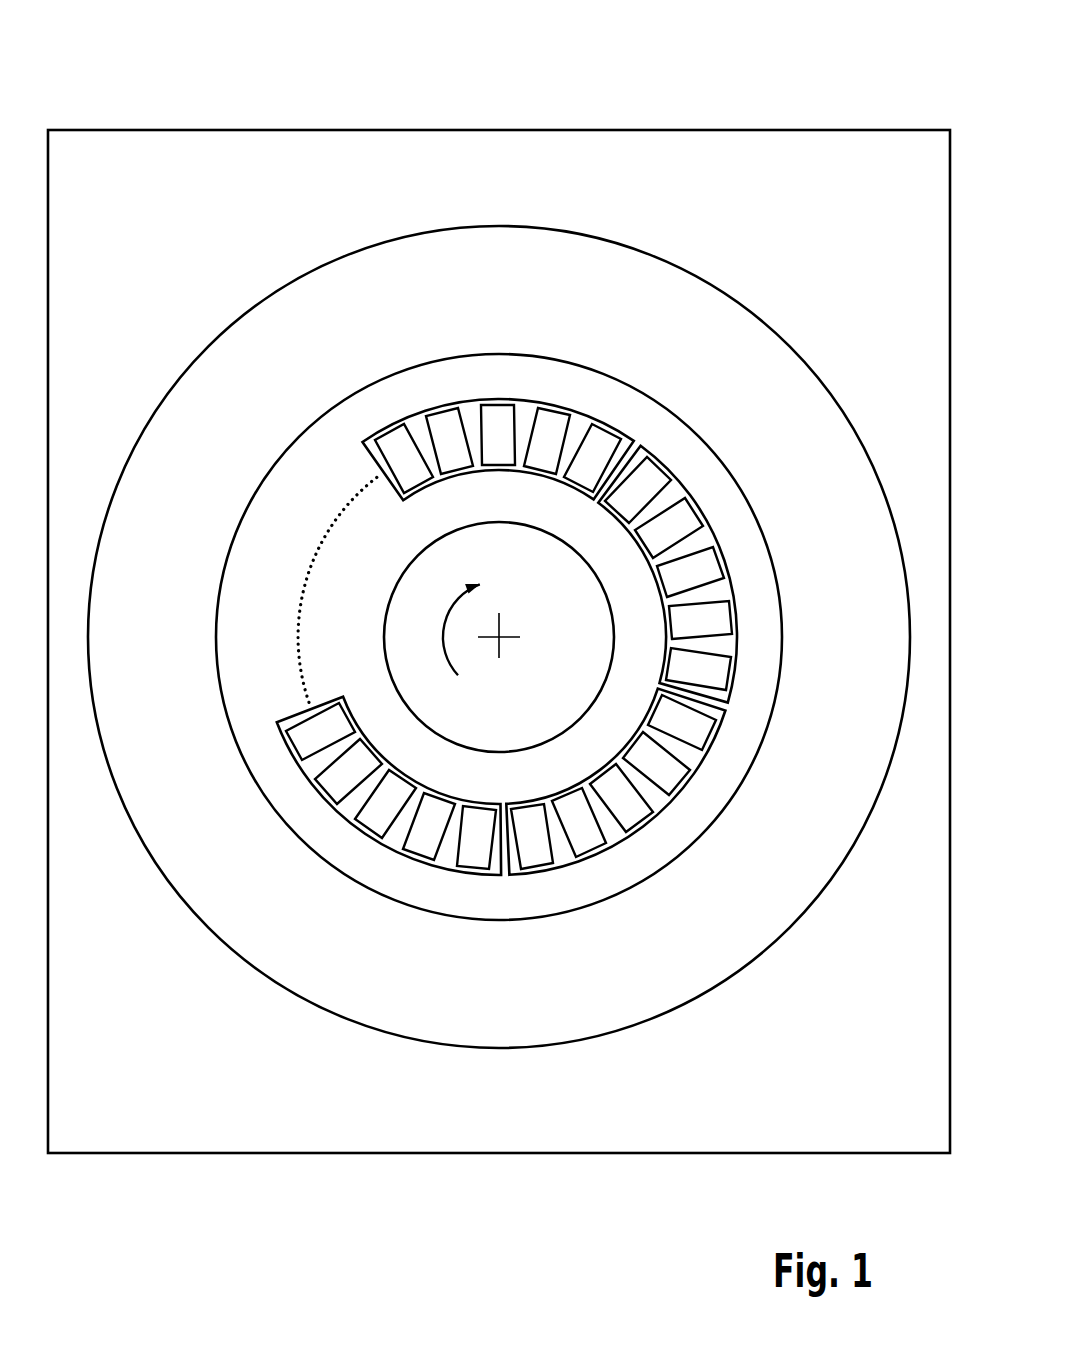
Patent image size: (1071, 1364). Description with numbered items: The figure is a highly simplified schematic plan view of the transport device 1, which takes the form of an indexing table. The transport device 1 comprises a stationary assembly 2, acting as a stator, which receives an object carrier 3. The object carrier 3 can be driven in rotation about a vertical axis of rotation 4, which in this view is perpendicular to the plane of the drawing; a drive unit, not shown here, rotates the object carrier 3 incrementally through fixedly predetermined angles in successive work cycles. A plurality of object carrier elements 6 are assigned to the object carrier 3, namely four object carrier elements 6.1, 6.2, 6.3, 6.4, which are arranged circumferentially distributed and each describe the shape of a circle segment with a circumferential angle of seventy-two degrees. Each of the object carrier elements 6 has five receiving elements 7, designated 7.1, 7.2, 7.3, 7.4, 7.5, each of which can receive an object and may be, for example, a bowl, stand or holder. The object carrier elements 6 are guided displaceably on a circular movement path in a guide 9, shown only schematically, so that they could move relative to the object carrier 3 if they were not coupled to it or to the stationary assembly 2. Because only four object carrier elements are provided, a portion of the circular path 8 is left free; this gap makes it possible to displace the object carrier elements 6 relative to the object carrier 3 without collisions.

The transport device 1 is at (712, 88).
The stationary assembly 2 is at (300, 130).
The object carrier 3 is at (755, 365).
The axis of rotation 4 is at (499, 637).
The object carrier elements 6 is at (405, 408).
The object carrier element 6.1 is at (442, 865).
The object carrier element 6.2 is at (707, 762).
The object carrier element 6.3 is at (718, 530).
The object carrier element 6.4 is at (532, 402).
The receiving elements 7 is at (496, 450).
The receiving element 7.1 is at (612, 442).
The receiving element 7.2 is at (543, 455).
The receiving element 7.3 is at (494, 430).
The receiving element 7.4 is at (445, 435).
The receiving element 7.5 is at (398, 470).
The circular path 8 is at (309, 570).
The guide 9 is at (383, 618).